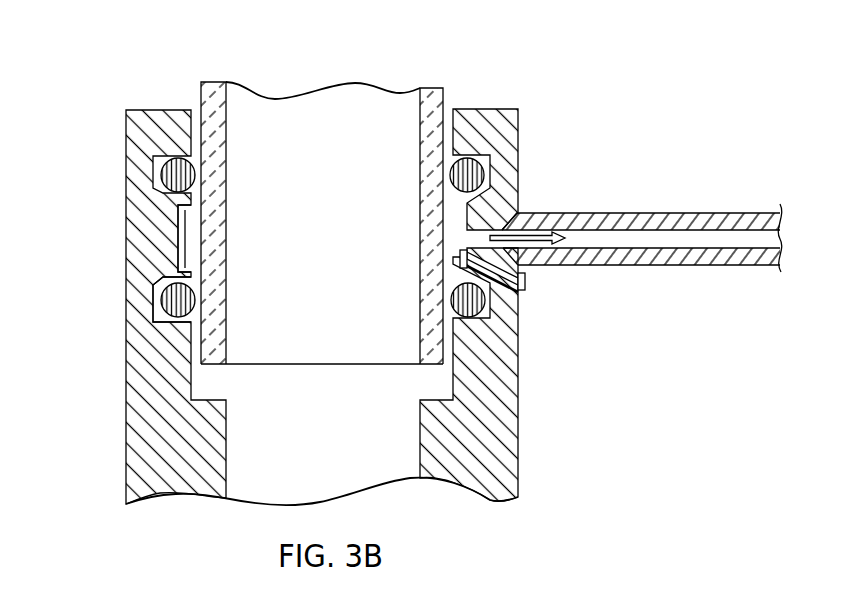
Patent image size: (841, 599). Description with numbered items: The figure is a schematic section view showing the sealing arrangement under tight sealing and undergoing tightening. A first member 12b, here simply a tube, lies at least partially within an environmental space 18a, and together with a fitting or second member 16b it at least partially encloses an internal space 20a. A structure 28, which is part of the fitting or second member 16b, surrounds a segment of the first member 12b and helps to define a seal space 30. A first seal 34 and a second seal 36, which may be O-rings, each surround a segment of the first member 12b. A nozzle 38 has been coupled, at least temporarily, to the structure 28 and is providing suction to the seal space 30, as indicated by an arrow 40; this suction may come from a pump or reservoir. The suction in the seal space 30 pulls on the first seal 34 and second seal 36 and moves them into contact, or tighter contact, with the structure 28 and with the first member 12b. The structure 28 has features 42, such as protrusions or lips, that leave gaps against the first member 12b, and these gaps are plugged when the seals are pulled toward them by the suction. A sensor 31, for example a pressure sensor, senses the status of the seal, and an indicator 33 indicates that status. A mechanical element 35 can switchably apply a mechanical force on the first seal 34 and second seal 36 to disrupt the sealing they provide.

The environmental space 18a is at (93, 48).
The first member 12b is at (443, 93).
The first seal 34 is at (482, 167).
The arrow 40 is at (556, 212).
The feature 42 is at (185, 203).
The seal space 30 is at (180, 237).
The mechanical element 35 is at (185, 251).
The structure 28 is at (127, 262).
The sensor 31 is at (461, 259).
The second seal 36 is at (155, 312).
The indicator 33 is at (528, 285).
The nozzle 38 is at (697, 266).
The fitting or second member 16b is at (519, 443).
The internal space 20a is at (349, 467).